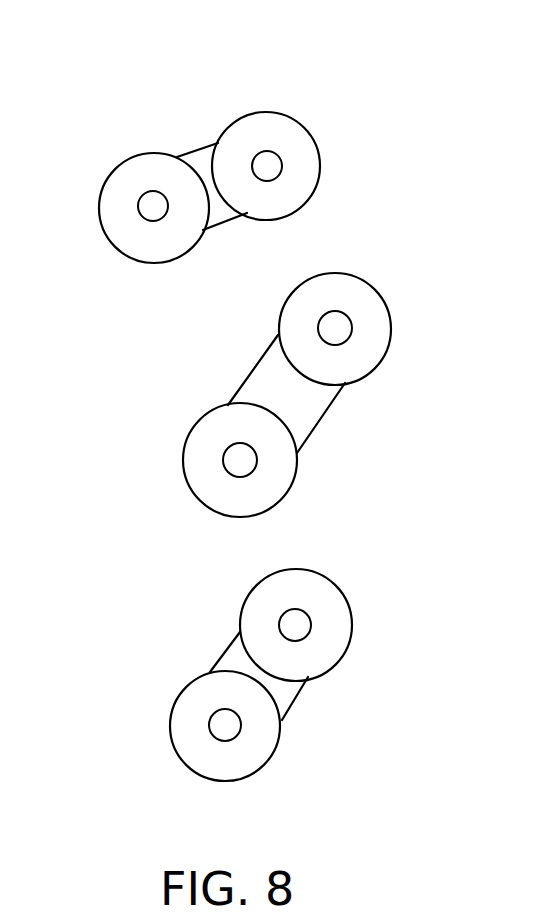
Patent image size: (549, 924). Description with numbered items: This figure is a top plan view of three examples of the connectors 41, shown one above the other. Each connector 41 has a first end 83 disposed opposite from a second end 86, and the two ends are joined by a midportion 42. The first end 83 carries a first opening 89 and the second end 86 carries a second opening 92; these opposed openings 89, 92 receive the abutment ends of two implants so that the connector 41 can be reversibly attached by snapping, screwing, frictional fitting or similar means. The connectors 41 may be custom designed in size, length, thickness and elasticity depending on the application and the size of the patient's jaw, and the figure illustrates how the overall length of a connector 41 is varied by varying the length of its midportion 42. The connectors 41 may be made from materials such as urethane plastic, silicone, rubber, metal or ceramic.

The connector 41 is at (197, 97).
The midportion 42 is at (202, 157).
The first end 83 is at (278, 125).
The second end 86 is at (127, 228).
The first opening 89 is at (273, 168).
The second opening 92 is at (148, 202).